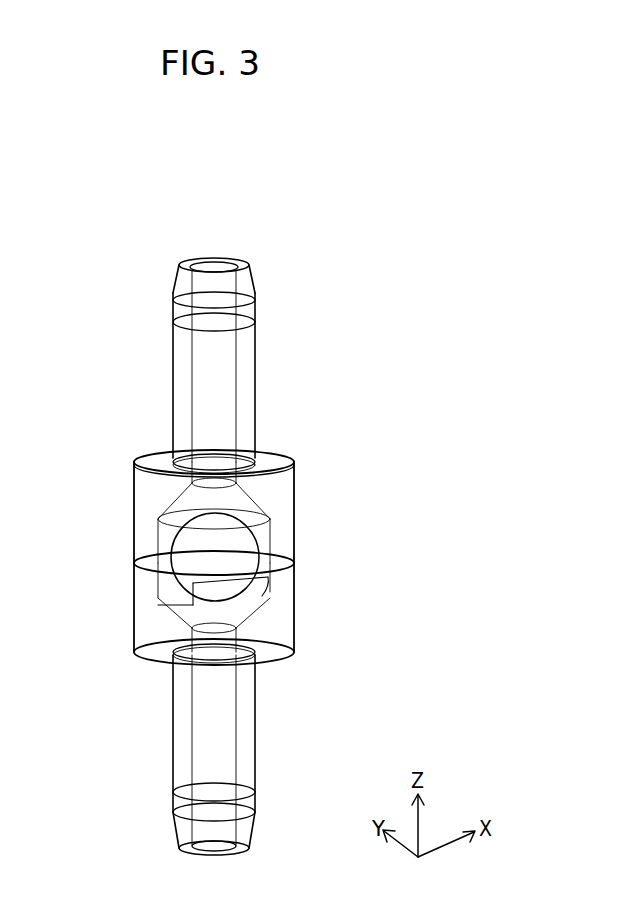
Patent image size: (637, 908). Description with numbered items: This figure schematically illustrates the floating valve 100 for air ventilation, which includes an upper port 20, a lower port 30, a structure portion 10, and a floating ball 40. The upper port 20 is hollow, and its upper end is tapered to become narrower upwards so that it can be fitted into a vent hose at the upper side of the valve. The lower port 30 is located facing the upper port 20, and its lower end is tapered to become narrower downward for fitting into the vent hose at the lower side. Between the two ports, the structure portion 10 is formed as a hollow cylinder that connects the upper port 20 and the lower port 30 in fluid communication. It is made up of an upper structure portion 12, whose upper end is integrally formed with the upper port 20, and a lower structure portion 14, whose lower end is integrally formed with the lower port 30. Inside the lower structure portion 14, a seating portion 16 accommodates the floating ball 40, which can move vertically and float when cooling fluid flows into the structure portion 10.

The floating valve for air ventilation 100 is at (84, 224).
The structure portion 10 is at (355, 478).
The upper structure portion 12 is at (277, 494).
The lower structure portion 14 is at (279, 618).
The seating portion 16 is at (188, 617).
The upper port 20 is at (246, 360).
The lower port 30 is at (247, 745).
The floating ball 40 is at (195, 553).